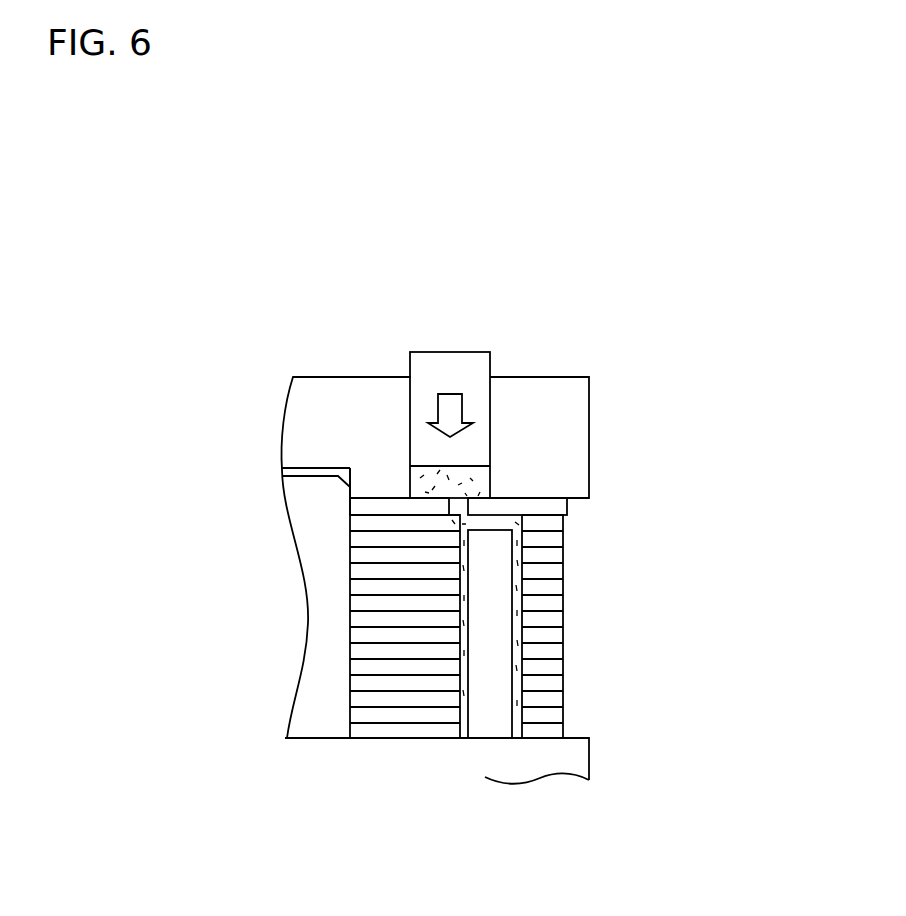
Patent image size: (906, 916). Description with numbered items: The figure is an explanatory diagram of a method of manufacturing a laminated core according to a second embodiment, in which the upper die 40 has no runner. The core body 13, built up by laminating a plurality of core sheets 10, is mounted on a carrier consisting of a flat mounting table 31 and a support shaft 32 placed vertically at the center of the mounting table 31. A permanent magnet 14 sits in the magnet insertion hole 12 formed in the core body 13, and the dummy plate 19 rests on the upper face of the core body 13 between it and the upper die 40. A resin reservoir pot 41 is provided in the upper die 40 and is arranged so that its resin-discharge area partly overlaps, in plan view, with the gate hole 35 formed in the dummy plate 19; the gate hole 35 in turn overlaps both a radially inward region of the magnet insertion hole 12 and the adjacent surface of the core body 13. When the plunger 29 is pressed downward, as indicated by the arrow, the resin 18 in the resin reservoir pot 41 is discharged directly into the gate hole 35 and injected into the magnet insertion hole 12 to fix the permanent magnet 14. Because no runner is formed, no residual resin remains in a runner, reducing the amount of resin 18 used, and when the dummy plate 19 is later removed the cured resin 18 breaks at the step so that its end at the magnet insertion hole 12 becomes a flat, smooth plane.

The core sheet 10 is at (375, 698).
The magnet insertion hole 12 is at (520, 700).
The core body 13 is at (580, 637).
The permanent magnet 14 is at (485, 685).
The resin 18 is at (508, 521).
The dummy plate 19 is at (568, 508).
The plunger 29 is at (470, 370).
The mounting table 31 is at (577, 758).
The support shaft 32 is at (327, 628).
The gate hole 35 is at (450, 514).
The upper die 40 is at (572, 428).
The resin reservoir pot 41 is at (410, 487).